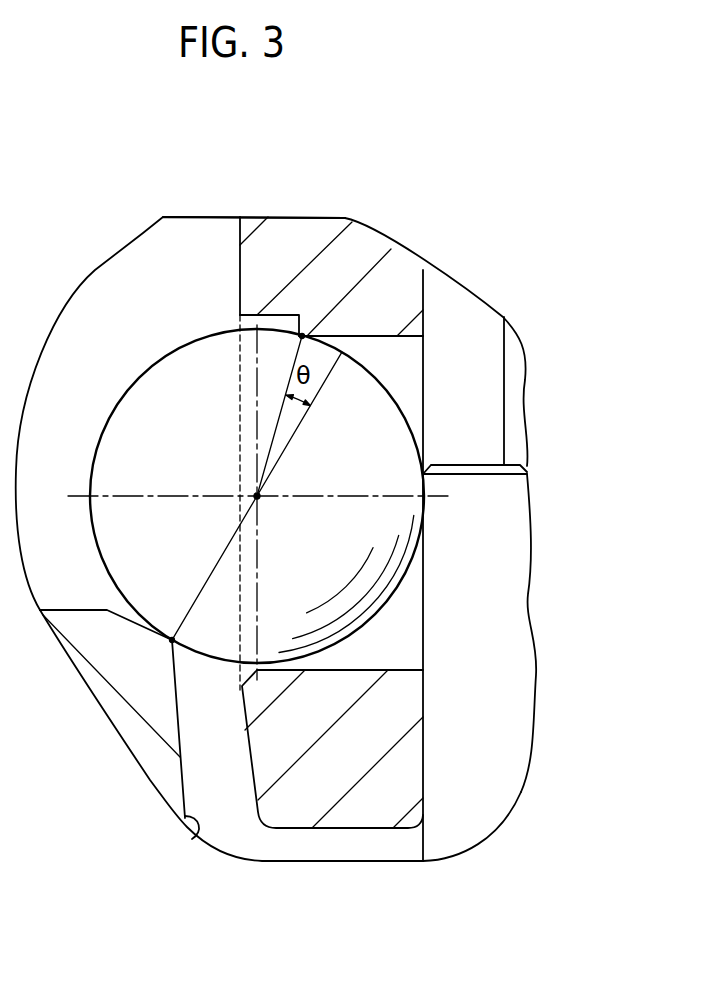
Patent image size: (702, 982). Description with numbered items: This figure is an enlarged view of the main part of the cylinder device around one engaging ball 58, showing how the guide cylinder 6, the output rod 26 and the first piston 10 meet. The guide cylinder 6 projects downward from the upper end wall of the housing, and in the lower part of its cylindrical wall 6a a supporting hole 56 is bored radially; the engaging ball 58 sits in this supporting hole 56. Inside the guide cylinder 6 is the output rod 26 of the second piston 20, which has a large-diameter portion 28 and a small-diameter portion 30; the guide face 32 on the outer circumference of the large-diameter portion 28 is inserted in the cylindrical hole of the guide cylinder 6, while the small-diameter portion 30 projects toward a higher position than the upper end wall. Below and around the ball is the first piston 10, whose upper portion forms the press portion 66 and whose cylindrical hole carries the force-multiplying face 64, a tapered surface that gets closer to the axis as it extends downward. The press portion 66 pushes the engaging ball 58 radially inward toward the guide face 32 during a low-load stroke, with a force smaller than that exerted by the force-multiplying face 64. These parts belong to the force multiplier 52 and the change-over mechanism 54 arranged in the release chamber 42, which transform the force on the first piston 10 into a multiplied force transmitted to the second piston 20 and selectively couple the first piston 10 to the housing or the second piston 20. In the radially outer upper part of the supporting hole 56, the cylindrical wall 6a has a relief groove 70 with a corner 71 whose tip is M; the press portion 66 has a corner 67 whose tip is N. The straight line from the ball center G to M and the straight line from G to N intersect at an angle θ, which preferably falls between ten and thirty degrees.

The guide cylinder 6 is at (375, 260).
The cylindrical wall 6a is at (398, 283).
The first piston 10 is at (150, 745).
The second piston 20 is at (388, 791).
The output rod 26 is at (481, 783).
The large-diameter portion 28 is at (519, 651).
The small-diameter portion 30 is at (515, 358).
The guide face 32 is at (422, 609).
The release chamber 42 is at (140, 262).
The force multiplier 52 is at (203, 793).
The change-over mechanism 54 is at (158, 340).
The supporting hole 56 is at (387, 338).
The engaging ball 58 is at (132, 382).
The force-multiplying face 64 is at (196, 834).
The press portion 66 is at (122, 660).
The corner 67 is at (168, 650).
The relief groove 70 is at (283, 320).
The corner 71 is at (310, 323).
The center of the engaging ball G is at (258, 498).
The tip of the corner of the relief groove M is at (300, 338).
The tip of the corner of the press portion N is at (172, 638).